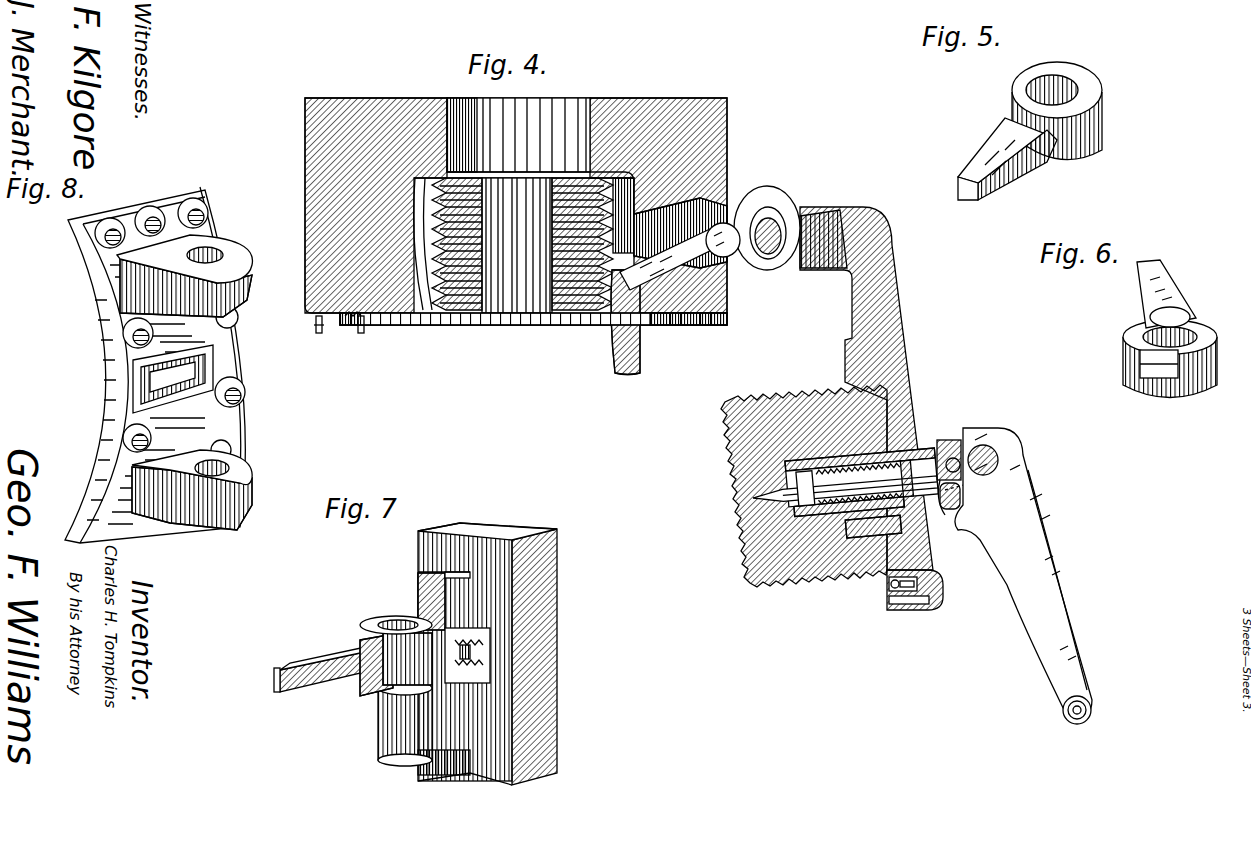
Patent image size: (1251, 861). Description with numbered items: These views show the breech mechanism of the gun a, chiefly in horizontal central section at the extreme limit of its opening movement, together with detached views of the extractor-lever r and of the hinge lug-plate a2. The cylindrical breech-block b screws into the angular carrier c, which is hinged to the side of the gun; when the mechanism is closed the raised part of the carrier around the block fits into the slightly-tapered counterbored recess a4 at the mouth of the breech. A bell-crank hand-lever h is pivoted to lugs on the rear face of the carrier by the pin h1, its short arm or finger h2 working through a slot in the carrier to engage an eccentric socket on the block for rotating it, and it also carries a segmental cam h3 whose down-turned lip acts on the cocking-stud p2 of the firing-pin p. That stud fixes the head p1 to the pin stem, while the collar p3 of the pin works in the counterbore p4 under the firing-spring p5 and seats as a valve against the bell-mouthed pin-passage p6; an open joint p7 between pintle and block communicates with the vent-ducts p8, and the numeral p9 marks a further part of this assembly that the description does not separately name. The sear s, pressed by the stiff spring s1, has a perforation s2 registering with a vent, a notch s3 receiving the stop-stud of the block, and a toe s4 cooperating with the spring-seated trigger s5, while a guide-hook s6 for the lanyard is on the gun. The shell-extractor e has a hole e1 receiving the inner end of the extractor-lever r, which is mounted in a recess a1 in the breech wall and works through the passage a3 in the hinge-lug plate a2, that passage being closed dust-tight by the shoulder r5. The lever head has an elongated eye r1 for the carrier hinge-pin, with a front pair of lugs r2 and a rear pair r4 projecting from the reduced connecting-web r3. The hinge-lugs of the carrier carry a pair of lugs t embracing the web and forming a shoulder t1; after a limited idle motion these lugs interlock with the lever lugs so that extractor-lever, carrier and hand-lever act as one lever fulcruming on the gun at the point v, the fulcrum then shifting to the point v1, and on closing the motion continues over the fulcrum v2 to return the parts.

In FIG. 4, the gun a is at (312, 214).
In FIG. 4, the recess a1 is at (680, 233).
In FIG. 8, the hinge-lug plate a2 is at (245, 362).
In FIG. 8, the passage a3 is at (173, 379).
In FIG. 4, the counterbored recess a4 is at (652, 326).
In FIG. 4, the breech-block b is at (730, 445).
In FIG. 4, the carrier c is at (897, 358).
In FIG. 7, the carrier c is at (548, 530).
In FIG. 4, the shell-extractor e is at (612, 328).
In FIG. 4, the recess or hole e1 is at (658, 294).
In FIG. 4, the hand-lever h is at (1007, 497).
In FIG. 4, the pin h1 is at (1000, 446).
In FIG. 4, the finger h2 is at (1001, 516).
In FIG. 4, the segmental cam h3 is at (968, 530).
In FIG. 4, the firing-pin p is at (934, 455).
In FIG. 4, the head p1 is at (948, 445).
In FIG. 4, the cocking-stud p2 is at (971, 494).
In FIG. 4, the collar p3 is at (802, 466).
In FIG. 4, the counterbore p4 is at (785, 485).
In FIG. 4, the firing-spring p5 is at (868, 515).
In FIG. 4, the pin-passage p6 is at (780, 500).
In FIG. 4, the open joint p7 is at (888, 510).
In FIG. 4, the vent-ducts p8 is at (866, 450).
In FIG. 4, the lower guide p9 is at (818, 515).
In FIG. 4, the extractor-lever r is at (670, 259).
In FIG. 5, the extractor-lever r is at (1008, 176).
In FIG. 6, the extractor-lever r is at (1180, 292).
In FIG. 7, the extractor-lever r is at (306, 670).
In FIG. 4, the slot or elongated eye r1 is at (760, 210).
In FIG. 5, the slot or elongated eye r1 is at (1040, 75).
In FIG. 6, the slot or elongated eye r1 is at (1205, 335).
In FIG. 7, the slot or elongated eye r1 is at (390, 617).
In FIG. 4, the front lugs r2 is at (782, 215).
In FIG. 5, the front lugs r2 is at (1080, 82).
In FIG. 6, the front lugs r2 is at (1180, 350).
In FIG. 7, the front lugs r2 is at (414, 620).
In FIG. 4, the connecting-web r3 is at (790, 222).
In FIG. 5, the connecting-web r3 is at (1090, 95).
In FIG. 6, the connecting-web r3 is at (1160, 380).
In FIG. 7, the connecting-web r3 is at (476, 618).
In FIG. 4, the rear lugs r4 is at (790, 270).
In FIG. 5, the rear lugs r4 is at (1103, 120).
In FIG. 6, the rear lugs r4 is at (1140, 360).
In FIG. 5, the shoulder r5 is at (1004, 120).
In FIG. 6, the shoulder r5 is at (1192, 315).
In FIG. 7, the shoulder r5 is at (362, 650).
In FIG. 4, the sear s is at (932, 570).
In FIG. 4, the spring s1 is at (889, 584).
In FIG. 4, the perforation s2 is at (890, 496).
In FIG. 4, the notch s3 is at (940, 505).
In FIG. 4, the toe s4 is at (905, 603).
In FIG. 4, the trigger s5 is at (362, 326).
In FIG. 4, the guide-hook s6 is at (315, 325).
In FIG. 4, the lugs t is at (823, 239).
In FIG. 7, the lugs t is at (462, 640).
In FIG. 4, the shoulder t1 is at (805, 215).
In FIG. 4, the fulcrum point v is at (690, 212).
In FIG. 4, the fulcrum point v1 is at (708, 200).
In FIG. 4, the fulcrum point v2 is at (730, 286).